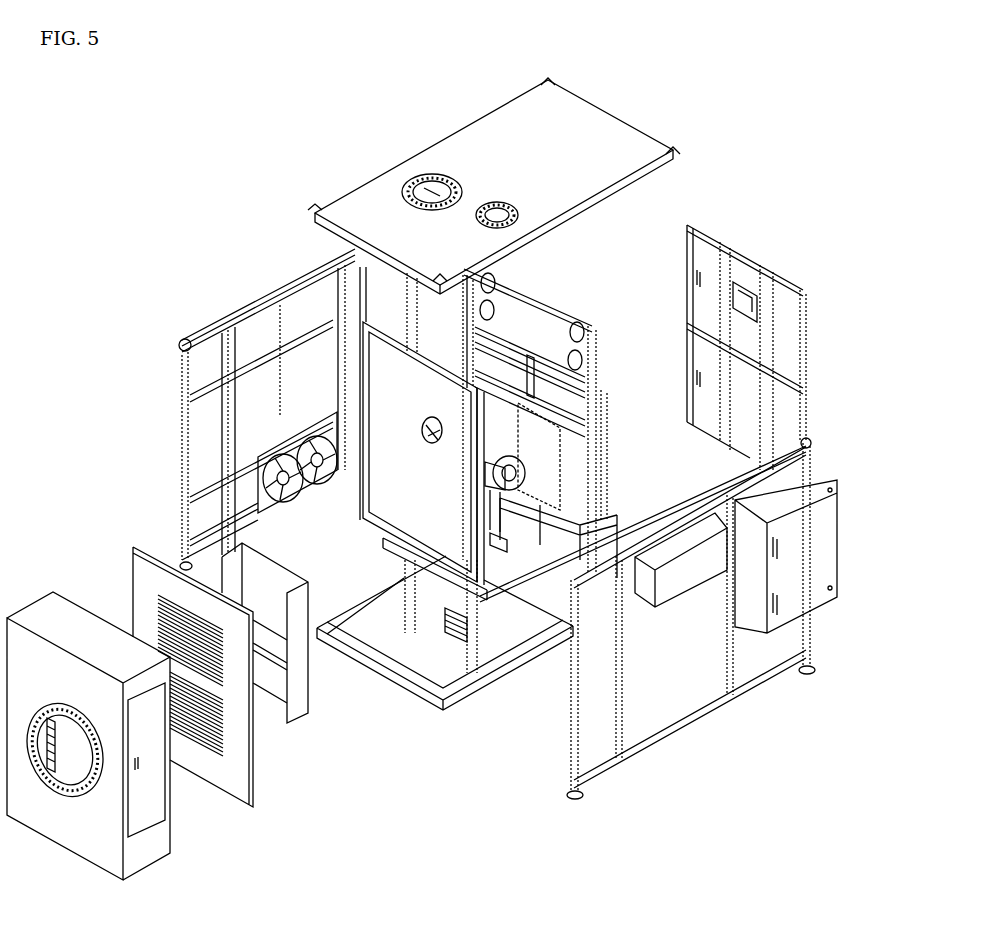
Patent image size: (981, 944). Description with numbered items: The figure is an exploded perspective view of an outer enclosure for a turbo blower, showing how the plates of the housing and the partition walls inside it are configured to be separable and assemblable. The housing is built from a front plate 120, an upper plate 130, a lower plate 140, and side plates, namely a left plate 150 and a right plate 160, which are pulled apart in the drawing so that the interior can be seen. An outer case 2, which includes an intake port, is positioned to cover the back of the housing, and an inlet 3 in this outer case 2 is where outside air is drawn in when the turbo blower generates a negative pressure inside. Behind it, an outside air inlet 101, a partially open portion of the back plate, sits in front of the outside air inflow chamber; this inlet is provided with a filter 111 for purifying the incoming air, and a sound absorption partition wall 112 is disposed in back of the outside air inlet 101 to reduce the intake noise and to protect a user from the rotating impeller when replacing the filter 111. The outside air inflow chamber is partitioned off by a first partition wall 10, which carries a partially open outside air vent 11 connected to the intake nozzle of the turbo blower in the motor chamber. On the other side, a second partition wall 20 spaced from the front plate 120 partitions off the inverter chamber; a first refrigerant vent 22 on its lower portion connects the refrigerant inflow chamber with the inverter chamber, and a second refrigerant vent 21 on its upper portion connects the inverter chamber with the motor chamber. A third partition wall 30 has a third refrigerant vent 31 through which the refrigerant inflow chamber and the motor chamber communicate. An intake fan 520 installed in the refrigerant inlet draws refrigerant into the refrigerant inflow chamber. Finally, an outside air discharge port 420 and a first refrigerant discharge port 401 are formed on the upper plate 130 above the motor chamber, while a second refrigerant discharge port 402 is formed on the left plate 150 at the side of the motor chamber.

The outer case 2 is at (87, 827).
The inlet 3 is at (45, 780).
The first partition wall 10 is at (194, 706).
The outside air vent 11 is at (423, 438).
The second partition wall 20 is at (555, 401).
The second refrigerant vent 21 is at (590, 328).
The first refrigerant vent 22 is at (547, 458).
The third partition wall 30 is at (512, 560).
The third refrigerant vent 31 is at (493, 585).
The outside air inlet 101 is at (160, 607).
The filter 111 is at (223, 733).
The sound absorption partition wall 112 is at (303, 704).
The front plate 120 is at (763, 268).
The upper plate 130 is at (602, 132).
The lower plate 140 is at (418, 697).
The left plate 150 is at (655, 760).
The right plate 160 is at (262, 308).
The first refrigerant discharge port 401 is at (494, 202).
The second refrigerant discharge port 402 is at (693, 577).
The outside air discharge port 420 is at (432, 174).
The intake fan 520 is at (290, 508).